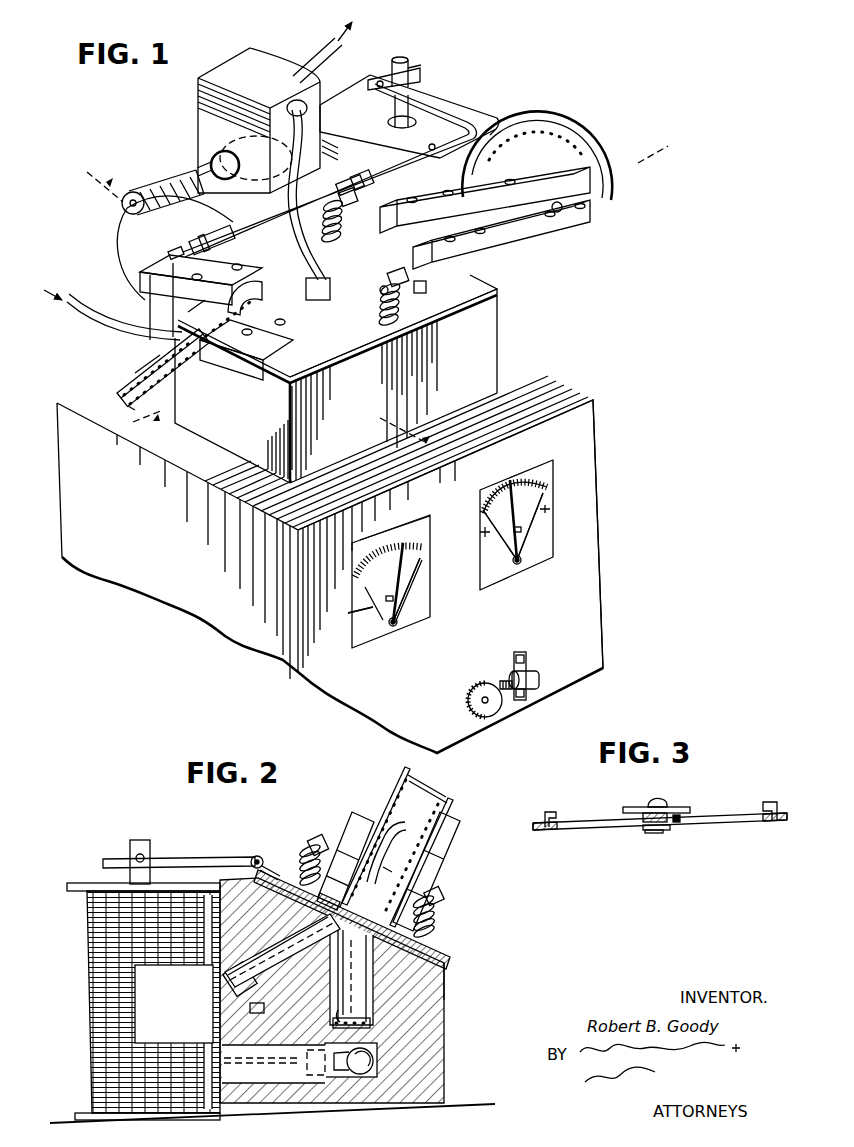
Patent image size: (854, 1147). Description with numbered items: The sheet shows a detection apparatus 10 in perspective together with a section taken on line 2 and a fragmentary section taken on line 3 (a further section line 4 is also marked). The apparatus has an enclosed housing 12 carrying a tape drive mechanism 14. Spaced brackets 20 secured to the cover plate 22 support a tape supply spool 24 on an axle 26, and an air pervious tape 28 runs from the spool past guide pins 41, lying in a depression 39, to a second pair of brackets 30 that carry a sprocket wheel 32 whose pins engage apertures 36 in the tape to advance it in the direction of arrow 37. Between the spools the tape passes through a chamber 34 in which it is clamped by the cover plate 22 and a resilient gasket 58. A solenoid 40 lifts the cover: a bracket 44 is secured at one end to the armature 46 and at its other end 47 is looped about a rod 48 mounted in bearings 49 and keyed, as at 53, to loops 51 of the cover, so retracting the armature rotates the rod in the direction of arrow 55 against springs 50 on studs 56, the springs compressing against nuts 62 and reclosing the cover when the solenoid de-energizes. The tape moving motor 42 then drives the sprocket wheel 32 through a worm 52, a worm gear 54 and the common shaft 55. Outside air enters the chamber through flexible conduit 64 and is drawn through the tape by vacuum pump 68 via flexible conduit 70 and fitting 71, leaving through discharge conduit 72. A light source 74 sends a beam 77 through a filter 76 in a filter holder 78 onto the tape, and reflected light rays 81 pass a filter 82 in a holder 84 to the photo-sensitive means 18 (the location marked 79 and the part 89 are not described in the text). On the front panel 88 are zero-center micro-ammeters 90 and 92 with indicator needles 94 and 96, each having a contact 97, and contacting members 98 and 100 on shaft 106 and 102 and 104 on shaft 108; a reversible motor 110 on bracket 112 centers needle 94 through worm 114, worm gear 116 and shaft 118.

In FIG. 1, the detection apparatus 10 is at (608, 512).
In FIG. 1, the housing 12 is at (499, 329).
In FIG. 2, the housing 12 is at (445, 1046).
In FIG. 1, the tape drive mechanism 14 is at (517, 258).
In FIG. 2, the photo-sensitive means 18 is at (178, 1010).
In FIG. 1, the brackets 20 is at (437, 222).
In FIG. 2, the brackets 20 is at (358, 812).
In FIG. 1, the cover plate 22 is at (486, 285).
In FIG. 2, the cover plate 22 is at (448, 957).
In FIG. 1, the tape supply spool 24 is at (603, 164).
In FIG. 2, the tape supply spool 24 is at (452, 800).
In FIG. 1, the axle 26 is at (563, 209).
In FIG. 1, the tape 28 is at (543, 143).
In FIG. 2, the tape 28 is at (328, 905).
In FIG. 1, the brackets 30 is at (176, 306).
In FIG. 1, the sprocket wheel 32 is at (185, 317).
In FIG. 2, the chamber 34 is at (368, 966).
In FIG. 1, the apertures 36 is at (147, 368).
In FIG. 1, the arrow 37 is at (149, 401).
In FIG. 2, the depression 39 is at (335, 893).
In FIG. 1, the solenoid 40 is at (366, 111).
In FIG. 2, the solenoid 40 is at (83, 884).
In FIG. 2, the guide pins 41 is at (340, 952).
In FIG. 1, the tape moving motor 42 is at (212, 163).
In FIG. 1, the bracket 44 is at (453, 93).
In FIG. 2, the bracket 44 is at (188, 858).
In FIG. 1, the armature 46 is at (403, 62).
In FIG. 2, the armature 46 is at (130, 845).
In FIG. 1, the end of bracket 47 is at (503, 124).
In FIG. 1, the rod 48 is at (450, 128).
In FIG. 2, the rod 48 is at (258, 856).
In FIG. 1, the bearings 49 is at (366, 165).
In FIG. 2, the bearings 49 is at (270, 858).
In FIG. 1, the springs 50 is at (334, 225).
In FIG. 2, the springs 50 is at (305, 861).
In FIG. 1, the loops 51 is at (203, 235).
In FIG. 1, the worm 52 is at (162, 197).
In FIG. 1, the key 53 is at (214, 236).
In FIG. 1, the worm gear 54 is at (125, 240).
In FIG. 1, the arrow 55 is at (178, 254).
In FIG. 1, the studs 56 is at (348, 205).
In FIG. 2, the studs 56 is at (322, 840).
In FIG. 1, the resilient gasket 58 is at (278, 382).
In FIG. 2, the resilient gasket 58 is at (445, 962).
In FIG. 1, the nuts 62 is at (380, 291).
In FIG. 1, the flexible conduit 64 is at (97, 320).
In FIG. 1, the vacuum pump 68 is at (240, 60).
In FIG. 1, the flexible conduit 70 is at (287, 196).
In FIG. 2, the flexible conduit 70 is at (393, 857).
In FIG. 2, the fitting 71 is at (388, 868).
In FIG. 1, the discharge conduit 72 is at (333, 44).
In FIG. 2, the light source 74 is at (357, 1066).
In FIG. 2, the filter 76 is at (340, 1023).
In FIG. 2, the beam 77 is at (354, 1003).
In FIG. 2, the filter holder 78 is at (337, 1030).
In FIG. 2, the center line 79 is at (348, 930).
In FIG. 2, the light rays 81 is at (293, 950).
In FIG. 2, the filter 82 is at (256, 1000).
In FIG. 2, the filter holder 84 is at (258, 1014).
In FIG. 1, the front panel 88 is at (587, 482).
In FIG. 2, the rod guide 89 is at (285, 965).
In FIG. 1, the zero-center micro-ammeter 90 is at (533, 460).
In FIG. 1, the zero-center micro-ammeter 92 is at (367, 548).
In FIG. 1, the indicator needle 94 is at (512, 490).
In FIG. 3, the indicator needle 94 is at (690, 818).
In FIG. 1, the indicator needle 96 is at (410, 532).
In FIG. 1, the contact 97 is at (393, 600).
In FIG. 3, the contact 97 is at (690, 810).
In FIG. 1, the contacting member 98 is at (250, 290).
In FIG. 3, the contacting member 98 is at (740, 822).
In FIG. 1, the contacting member 100 is at (492, 545).
In FIG. 3, the contacting member 100 is at (592, 828).
In FIG. 1, the contacting member 102 is at (415, 579).
In FIG. 1, the contacting member 104 is at (352, 619).
In FIG. 1, the shaft 106 is at (522, 568).
In FIG. 3, the shaft 106 is at (668, 800).
In FIG. 1, the shaft 108 is at (400, 625).
In FIG. 1, the reversible motor 110 is at (533, 668).
In FIG. 1, the bracket 112 is at (528, 690).
In FIG. 1, the worm 114 is at (485, 677).
In FIG. 1, the worm gear 116 is at (468, 704).
In FIG. 1, the shaft 118 is at (482, 704).
In FIG. 1, the section line 2— 2 is at (266, 309).
In FIG. 1, the section line 3— 3 is at (514, 539).
In FIG. 1, the section line 4- 4 is at (396, 292).